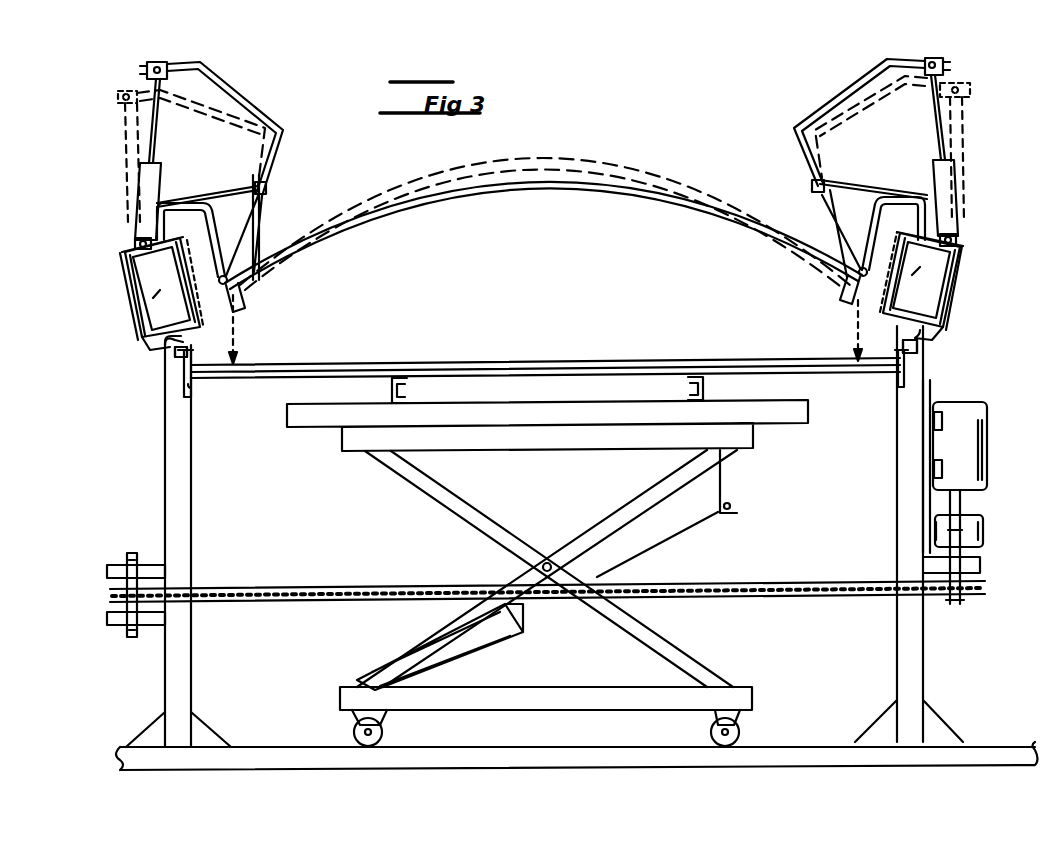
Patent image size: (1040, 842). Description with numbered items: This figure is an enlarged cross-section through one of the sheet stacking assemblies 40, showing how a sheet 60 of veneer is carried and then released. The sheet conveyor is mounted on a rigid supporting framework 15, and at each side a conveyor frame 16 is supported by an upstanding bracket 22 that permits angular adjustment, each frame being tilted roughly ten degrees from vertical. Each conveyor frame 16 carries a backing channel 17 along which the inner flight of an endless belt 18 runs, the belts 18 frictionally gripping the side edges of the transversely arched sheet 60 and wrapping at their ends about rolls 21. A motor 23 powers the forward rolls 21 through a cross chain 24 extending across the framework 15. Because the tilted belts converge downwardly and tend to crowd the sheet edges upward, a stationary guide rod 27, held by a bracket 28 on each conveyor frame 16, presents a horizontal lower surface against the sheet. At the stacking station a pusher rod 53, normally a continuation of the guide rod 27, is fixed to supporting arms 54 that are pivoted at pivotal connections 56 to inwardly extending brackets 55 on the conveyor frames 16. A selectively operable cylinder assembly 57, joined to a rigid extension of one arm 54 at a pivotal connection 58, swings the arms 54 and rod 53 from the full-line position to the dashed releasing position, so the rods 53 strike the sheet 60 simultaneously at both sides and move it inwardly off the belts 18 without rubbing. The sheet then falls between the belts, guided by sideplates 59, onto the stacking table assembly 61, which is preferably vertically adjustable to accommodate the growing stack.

The supporting framework 15 is at (181, 483).
The conveyor frame 16 is at (137, 307).
The backing channel 17 is at (150, 296).
The endless belt 18 is at (205, 326).
The roll 21 is at (160, 313).
The upstanding bracket 22 is at (172, 347).
The motor 23 is at (977, 433).
The cross chain 24 is at (718, 583).
The guide rod 27 is at (245, 290).
The bracket 28 is at (178, 208).
The sheet stacking assembly 40 is at (104, 433).
The pusher rod 53 is at (262, 284).
The supporting arm 54 is at (232, 92).
The bracket 55 is at (268, 188).
The pivotal connection 56 is at (268, 195).
The cylinder assembly 57 is at (140, 176).
The pivotal connection 58 is at (157, 62).
The sideplate 59 is at (191, 393).
The sheet 60 is at (530, 183).
The stacking table assembly 61 is at (406, 506).